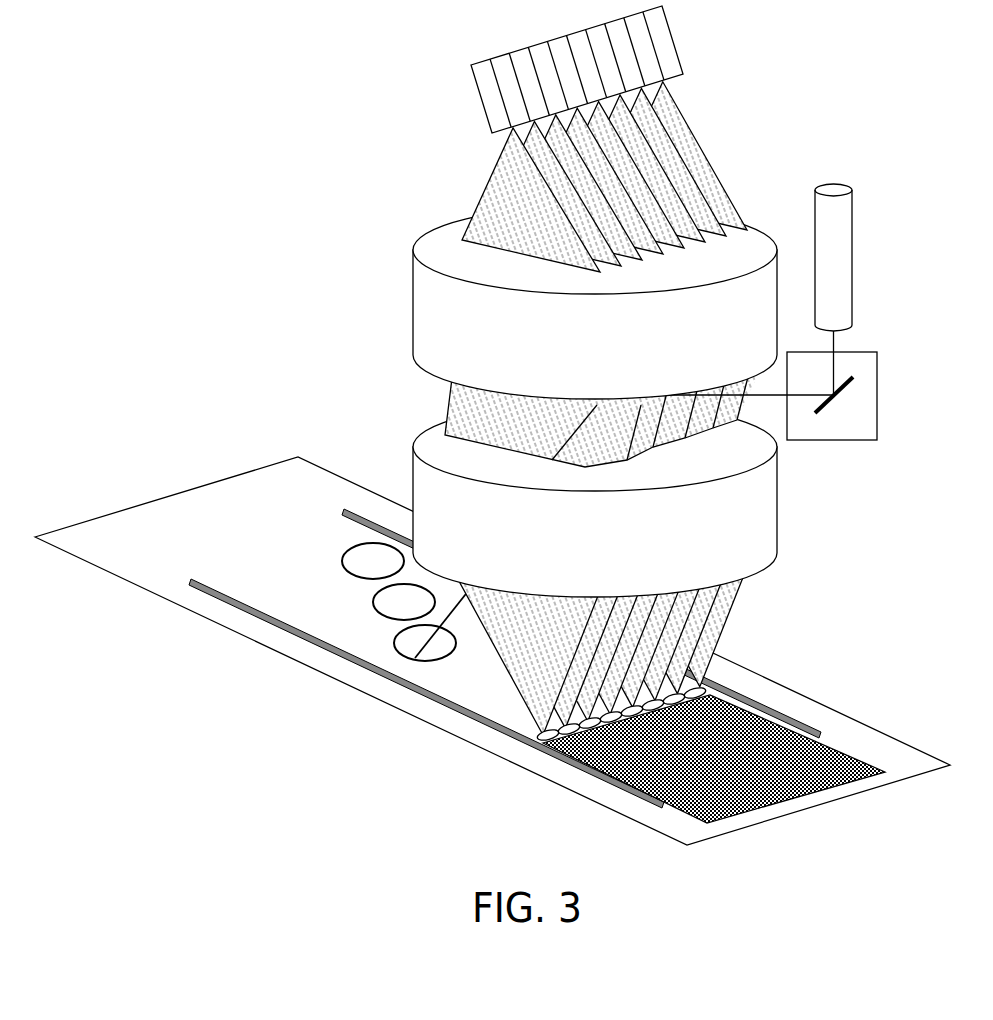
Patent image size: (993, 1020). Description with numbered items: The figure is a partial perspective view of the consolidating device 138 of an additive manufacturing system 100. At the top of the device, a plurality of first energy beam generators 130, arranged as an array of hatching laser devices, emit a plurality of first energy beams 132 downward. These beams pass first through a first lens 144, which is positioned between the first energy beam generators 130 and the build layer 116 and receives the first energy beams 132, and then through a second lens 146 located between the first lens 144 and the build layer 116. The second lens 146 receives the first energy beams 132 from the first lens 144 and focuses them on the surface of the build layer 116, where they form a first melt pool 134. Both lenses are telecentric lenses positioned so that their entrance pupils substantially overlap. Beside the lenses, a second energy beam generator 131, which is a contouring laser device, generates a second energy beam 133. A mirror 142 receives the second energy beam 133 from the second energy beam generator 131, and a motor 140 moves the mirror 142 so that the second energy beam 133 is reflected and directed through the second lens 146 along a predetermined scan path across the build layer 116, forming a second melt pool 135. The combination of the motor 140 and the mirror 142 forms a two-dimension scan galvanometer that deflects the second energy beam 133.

The additive manufacturing system 100 is at (504, 425).
The build layer 116 is at (263, 478).
The first energy beam generators 130 is at (684, 40).
The second energy beam generator 131 is at (857, 247).
The first energy beams 132 is at (573, 150).
The second energy beam 133 is at (455, 617).
The first melt pool 134 is at (710, 685).
The second melt pool 135 is at (380, 668).
The consolidating device 138 is at (880, 251).
The motor 140 is at (878, 428).
The mirror 142 is at (855, 378).
The first lens 144 is at (413, 295).
The second lens 146 is at (412, 465).